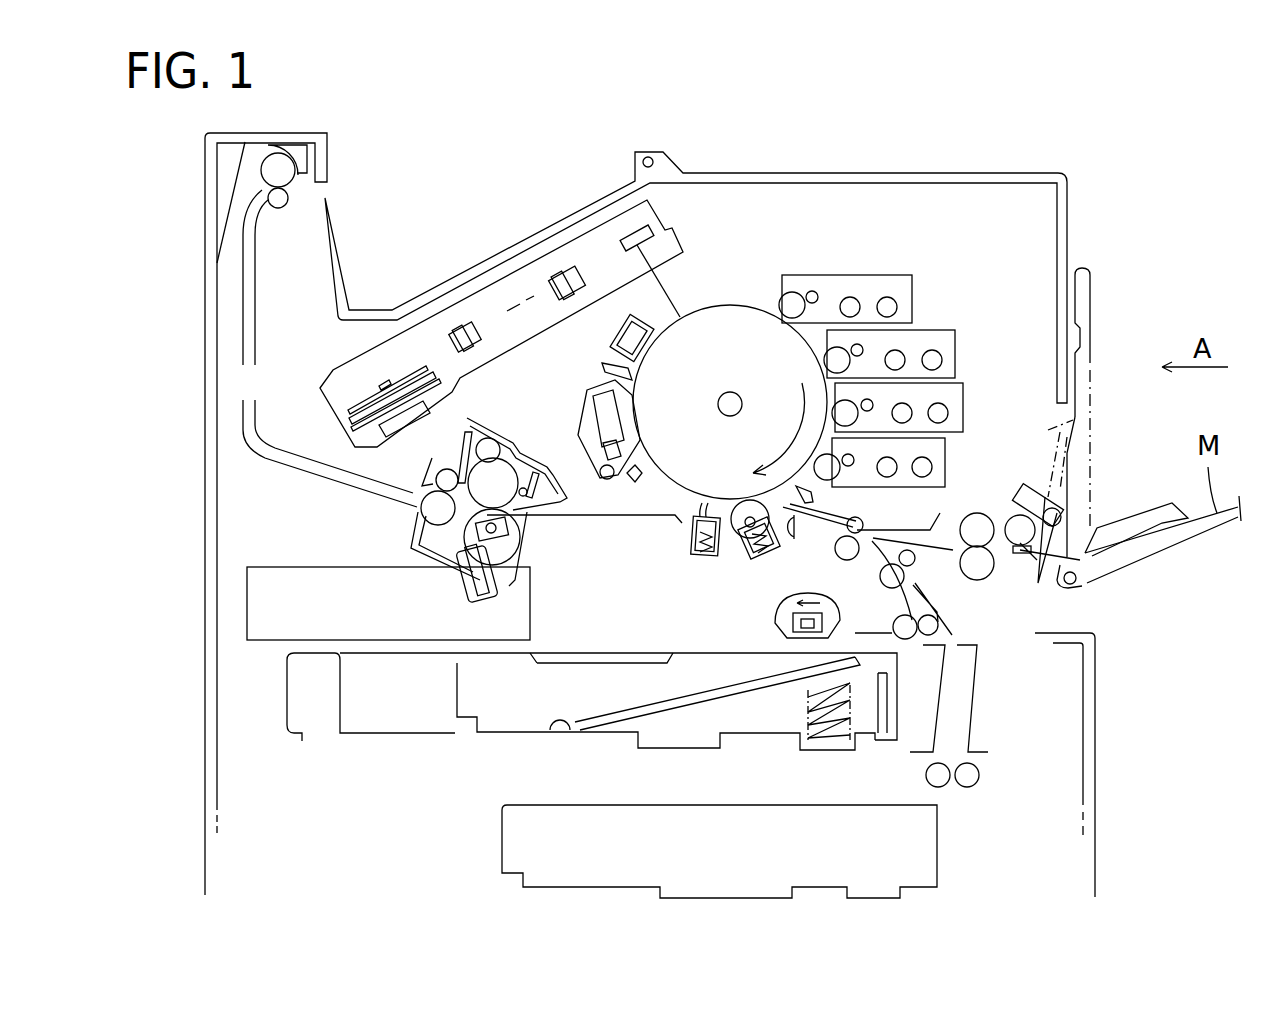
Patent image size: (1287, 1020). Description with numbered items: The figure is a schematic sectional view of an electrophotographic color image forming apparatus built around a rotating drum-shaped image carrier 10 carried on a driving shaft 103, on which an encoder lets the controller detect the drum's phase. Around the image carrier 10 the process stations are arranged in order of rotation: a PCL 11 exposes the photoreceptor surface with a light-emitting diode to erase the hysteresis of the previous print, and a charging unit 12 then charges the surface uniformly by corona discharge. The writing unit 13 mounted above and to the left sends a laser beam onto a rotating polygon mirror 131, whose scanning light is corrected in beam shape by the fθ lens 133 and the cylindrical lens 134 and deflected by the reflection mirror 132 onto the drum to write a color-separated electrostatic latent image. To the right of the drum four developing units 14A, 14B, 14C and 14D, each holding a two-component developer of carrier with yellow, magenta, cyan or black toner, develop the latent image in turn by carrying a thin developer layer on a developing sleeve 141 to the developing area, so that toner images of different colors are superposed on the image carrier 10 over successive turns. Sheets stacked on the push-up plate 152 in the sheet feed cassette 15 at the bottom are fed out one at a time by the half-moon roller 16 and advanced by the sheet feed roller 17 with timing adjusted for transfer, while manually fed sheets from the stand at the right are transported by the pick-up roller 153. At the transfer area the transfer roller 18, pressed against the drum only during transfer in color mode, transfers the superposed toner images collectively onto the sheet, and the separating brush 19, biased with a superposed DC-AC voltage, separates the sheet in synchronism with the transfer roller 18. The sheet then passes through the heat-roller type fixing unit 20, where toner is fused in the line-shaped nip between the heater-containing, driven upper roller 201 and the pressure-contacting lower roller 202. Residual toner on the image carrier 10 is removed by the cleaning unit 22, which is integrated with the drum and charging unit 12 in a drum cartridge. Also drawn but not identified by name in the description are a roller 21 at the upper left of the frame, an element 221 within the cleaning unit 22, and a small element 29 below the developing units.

The image carrier 10 is at (708, 307).
The driving shaft 103 is at (732, 392).
The PCL 11 is at (602, 370).
The charging unit 12 is at (612, 337).
The writing unit 13 is at (503, 290).
The polygon mirror 131 is at (347, 397).
The reflection mirror 132 is at (627, 232).
The fθ lens 133 is at (467, 323).
The cylindrical lens 134 is at (563, 258).
The developing unit 14A is at (862, 275).
The developing unit 14B is at (935, 330).
The developing unit 14C is at (968, 383).
The developing unit 14D is at (948, 440).
The developing sleeve 141 is at (777, 300).
The sheet feed cassette 15 is at (573, 675).
The push-up plate 152 is at (770, 678).
The pick-up roller 153 is at (1010, 513).
The half-moon roller 16 is at (775, 620).
The sheet feed roller 17 is at (847, 560).
The transfer roller 18 is at (740, 547).
The separating brush 19 is at (690, 533).
The fixing unit 20 is at (430, 543).
The upper roller 201 is at (567, 497).
The lower roller 202 is at (517, 560).
The feed roller 21 is at (297, 179).
The cleaning unit 22 is at (590, 417).
The cleaning blade 221 is at (632, 393).
The separation member 29 is at (809, 493).